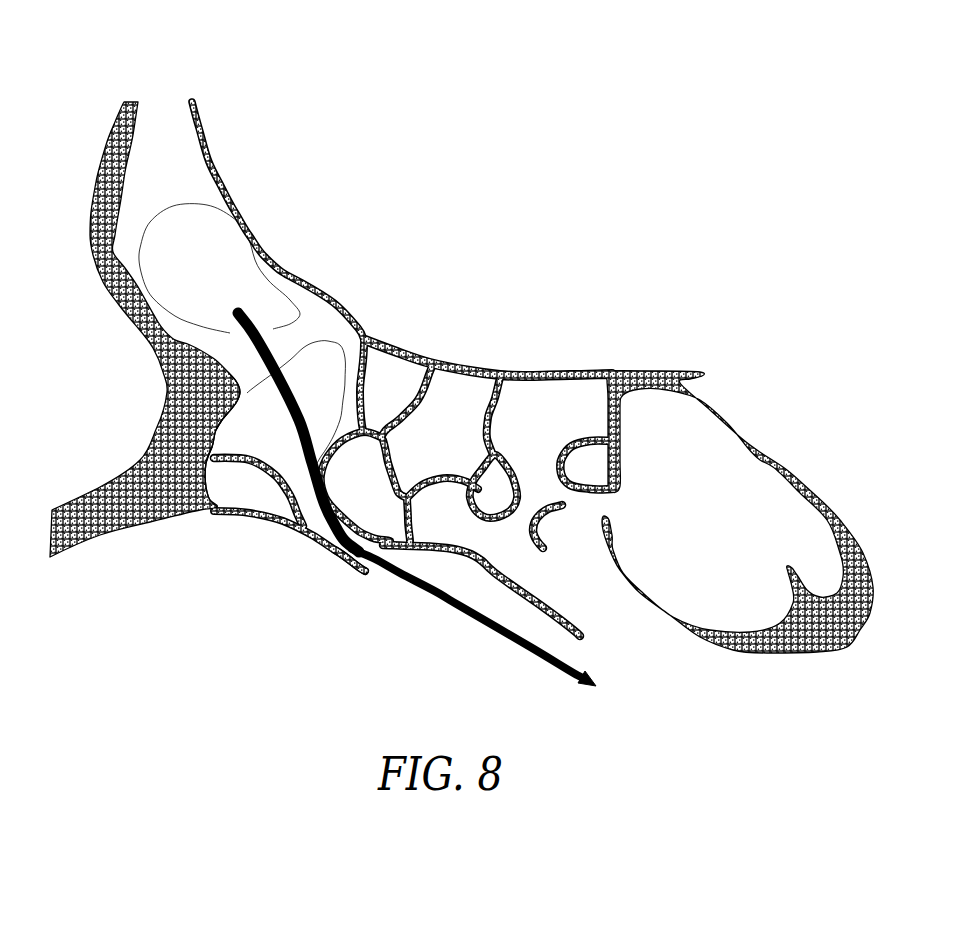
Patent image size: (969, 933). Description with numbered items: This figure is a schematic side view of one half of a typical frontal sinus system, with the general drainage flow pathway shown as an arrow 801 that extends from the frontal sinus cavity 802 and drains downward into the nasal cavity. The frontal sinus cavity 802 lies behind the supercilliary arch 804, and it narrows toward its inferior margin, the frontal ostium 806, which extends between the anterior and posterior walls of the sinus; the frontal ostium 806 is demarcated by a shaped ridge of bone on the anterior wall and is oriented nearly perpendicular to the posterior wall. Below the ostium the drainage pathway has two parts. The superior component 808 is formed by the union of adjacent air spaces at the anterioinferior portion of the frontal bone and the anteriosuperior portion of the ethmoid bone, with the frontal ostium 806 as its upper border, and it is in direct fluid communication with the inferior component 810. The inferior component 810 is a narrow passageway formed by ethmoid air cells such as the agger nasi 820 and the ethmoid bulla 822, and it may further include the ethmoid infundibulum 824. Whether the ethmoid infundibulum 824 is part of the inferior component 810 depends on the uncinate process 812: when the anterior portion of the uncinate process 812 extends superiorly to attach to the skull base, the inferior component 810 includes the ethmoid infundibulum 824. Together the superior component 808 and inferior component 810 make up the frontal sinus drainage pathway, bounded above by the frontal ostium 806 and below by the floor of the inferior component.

The arrow 801 is at (470, 613).
The frontal sinus cavity 802 is at (220, 247).
The supercilliary arch 804 is at (90, 196).
The frontal ostium 806 is at (170, 390).
The superior component 808 is at (247, 442).
The inferior component 810 is at (305, 492).
The uncinate process 812 is at (323, 547).
The agger nasi 820 is at (245, 488).
The ethmoid bulla 822 is at (368, 487).
The ethmoid infundibulum 824 is at (350, 563).